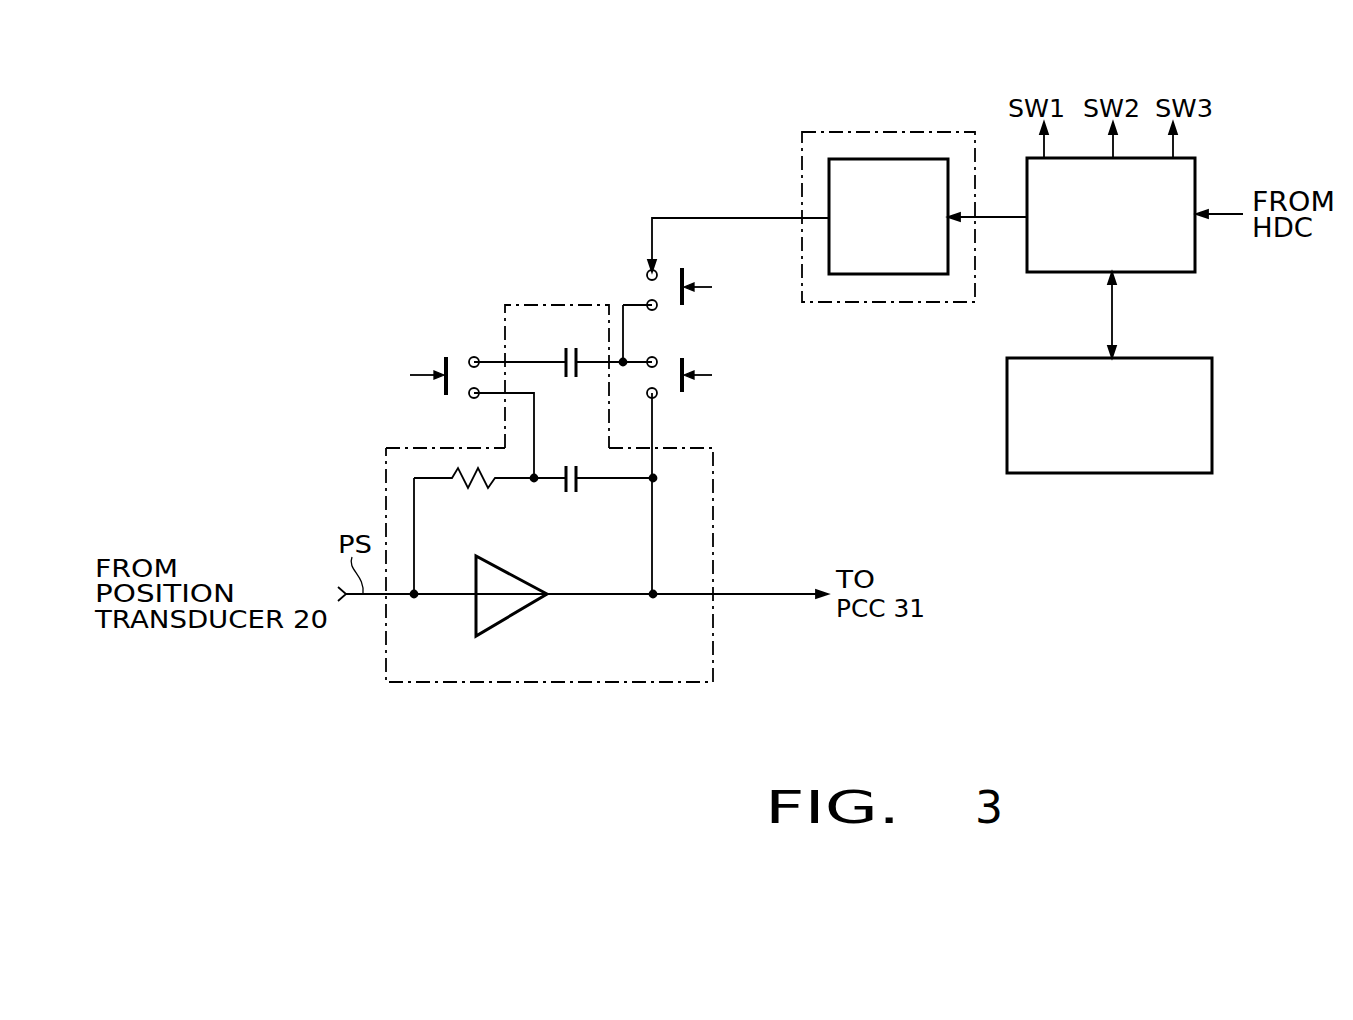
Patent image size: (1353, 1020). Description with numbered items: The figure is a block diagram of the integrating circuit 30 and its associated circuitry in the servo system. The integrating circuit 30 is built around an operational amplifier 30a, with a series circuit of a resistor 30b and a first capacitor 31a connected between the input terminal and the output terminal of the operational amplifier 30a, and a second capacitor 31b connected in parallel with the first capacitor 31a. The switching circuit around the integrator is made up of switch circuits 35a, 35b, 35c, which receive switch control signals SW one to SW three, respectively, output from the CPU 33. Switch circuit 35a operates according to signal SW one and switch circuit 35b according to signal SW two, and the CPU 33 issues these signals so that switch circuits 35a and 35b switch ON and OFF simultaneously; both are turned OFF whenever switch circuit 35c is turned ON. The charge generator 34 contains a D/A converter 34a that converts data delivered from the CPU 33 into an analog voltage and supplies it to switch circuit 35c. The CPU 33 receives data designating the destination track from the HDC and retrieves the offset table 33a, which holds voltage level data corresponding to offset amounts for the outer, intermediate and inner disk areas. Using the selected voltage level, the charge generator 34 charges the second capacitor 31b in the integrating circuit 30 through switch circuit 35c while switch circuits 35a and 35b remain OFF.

The integrating circuit 30 is at (630, 683).
The operational amplifier 30a is at (522, 607).
The resistor 30b is at (492, 490).
The first capacitor 31a is at (581, 492).
The second capacitor 31b is at (573, 347).
The CPU 33 is at (1170, 274).
The offset table 33a is at (1173, 474).
The charge generator 34 is at (925, 303).
The D/A converter 34a is at (927, 159).
The switch circuit 35a is at (466, 360).
The switch circuit 35b is at (658, 397).
The switch circuit 35c is at (660, 273).